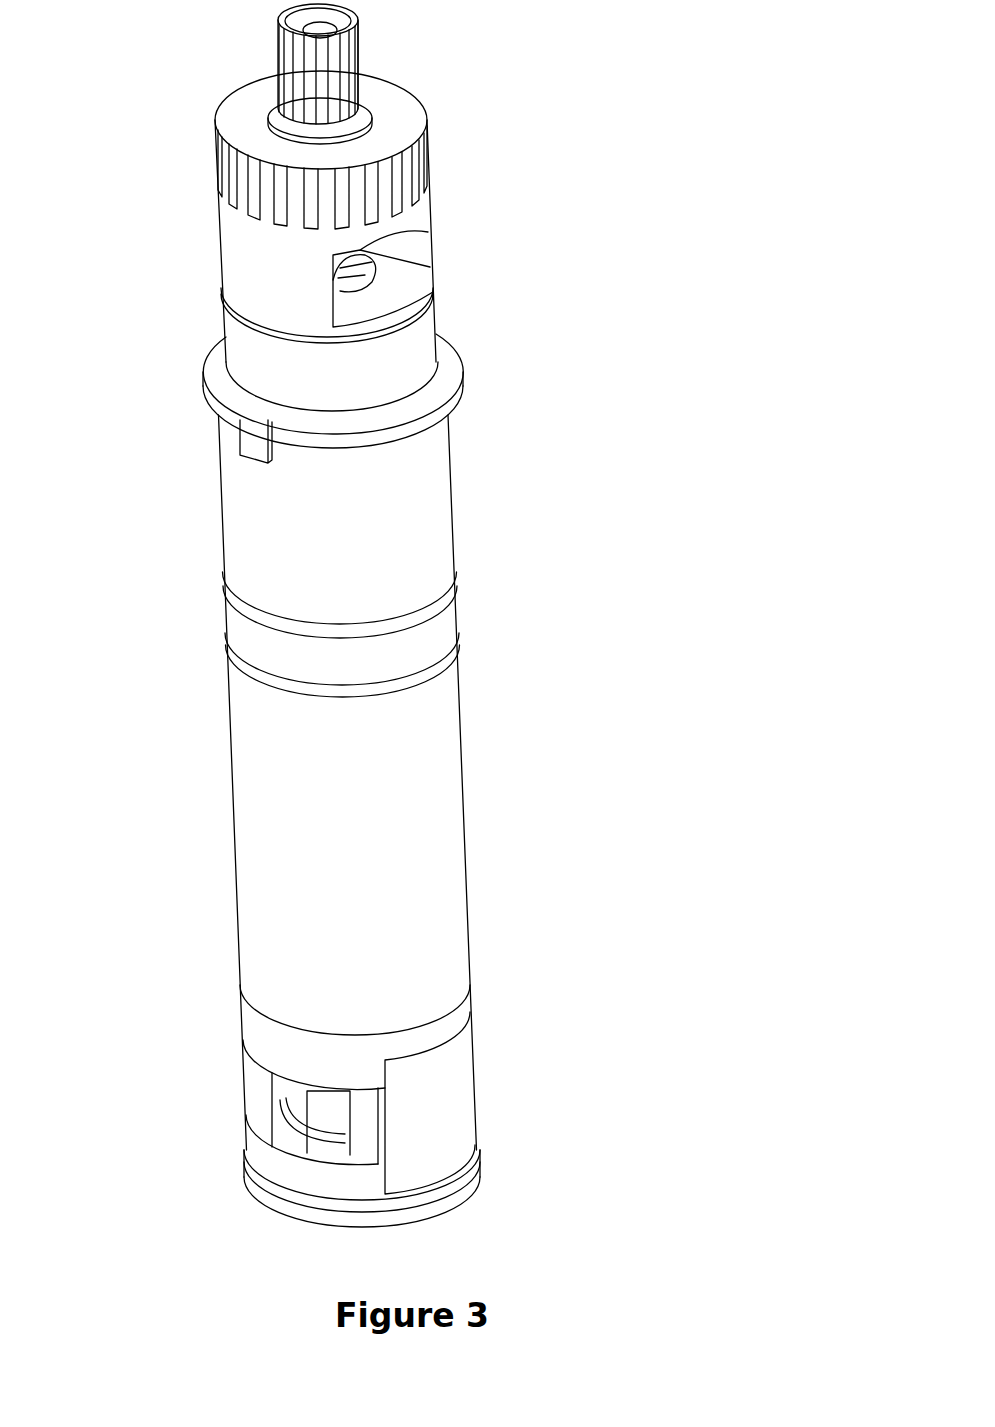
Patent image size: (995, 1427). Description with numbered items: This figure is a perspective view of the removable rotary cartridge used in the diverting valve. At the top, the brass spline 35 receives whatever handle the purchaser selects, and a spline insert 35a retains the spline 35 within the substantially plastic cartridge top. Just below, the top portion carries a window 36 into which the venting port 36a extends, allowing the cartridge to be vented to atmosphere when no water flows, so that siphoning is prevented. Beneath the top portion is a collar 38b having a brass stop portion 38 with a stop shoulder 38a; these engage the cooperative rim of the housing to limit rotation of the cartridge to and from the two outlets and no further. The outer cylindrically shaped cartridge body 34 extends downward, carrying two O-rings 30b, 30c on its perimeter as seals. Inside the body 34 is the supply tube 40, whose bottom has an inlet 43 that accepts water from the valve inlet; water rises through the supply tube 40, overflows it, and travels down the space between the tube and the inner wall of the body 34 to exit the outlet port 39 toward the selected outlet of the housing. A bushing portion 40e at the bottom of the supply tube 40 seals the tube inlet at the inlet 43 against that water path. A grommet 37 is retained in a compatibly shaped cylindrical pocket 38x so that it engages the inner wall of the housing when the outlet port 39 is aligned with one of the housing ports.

The spline 35 is at (362, 31).
The spline insert 35a is at (390, 173).
The window 36 is at (398, 290).
The venting port 36a is at (430, 261).
The stop portion 38 is at (217, 400).
The stop shoulder 38a is at (247, 455).
The collar 38b is at (460, 372).
The cylindrical pocket 38x is at (470, 1022).
The O-ring 30b is at (458, 578).
The O-ring 30c is at (459, 637).
The cartridge body 34 is at (465, 763).
The grommet 37 is at (455, 1088).
The outlet port 39 is at (267, 1113).
The supply tube 40 is at (332, 1110).
The bushing portion 40e is at (353, 1218).
The inlet 43 is at (420, 1236).